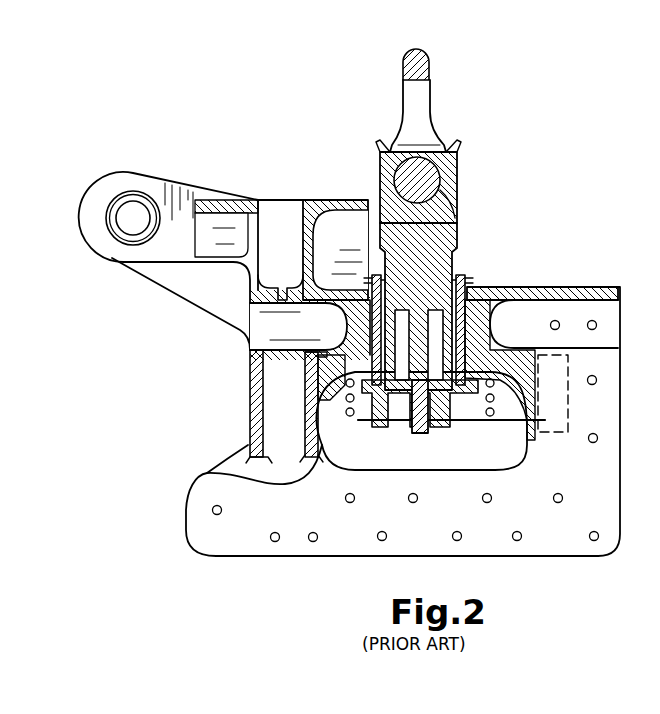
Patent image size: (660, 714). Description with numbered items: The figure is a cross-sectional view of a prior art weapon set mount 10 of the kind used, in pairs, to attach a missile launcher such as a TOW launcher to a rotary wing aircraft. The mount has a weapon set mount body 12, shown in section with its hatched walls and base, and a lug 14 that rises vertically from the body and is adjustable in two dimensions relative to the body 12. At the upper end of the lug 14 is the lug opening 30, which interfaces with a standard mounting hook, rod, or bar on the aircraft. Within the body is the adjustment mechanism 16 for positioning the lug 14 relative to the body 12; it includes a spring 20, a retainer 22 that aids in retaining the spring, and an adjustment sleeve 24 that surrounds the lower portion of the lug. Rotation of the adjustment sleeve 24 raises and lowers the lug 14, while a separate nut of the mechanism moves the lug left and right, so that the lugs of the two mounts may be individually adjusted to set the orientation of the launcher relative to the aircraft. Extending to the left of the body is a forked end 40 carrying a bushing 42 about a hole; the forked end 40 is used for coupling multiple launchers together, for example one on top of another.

The weapon set mount 10 is at (153, 65).
The weapon set mount body 12 is at (184, 154).
The lug 14 is at (372, 68).
The adjustment mechanism 16 is at (506, 198).
The spring 20 is at (350, 398).
The retainer 22 is at (207, 473).
The adjustment sleeve 24 is at (372, 388).
The lug opening 30 is at (457, 101).
The forked end 40 is at (132, 223).
The bushing 42 is at (118, 196).